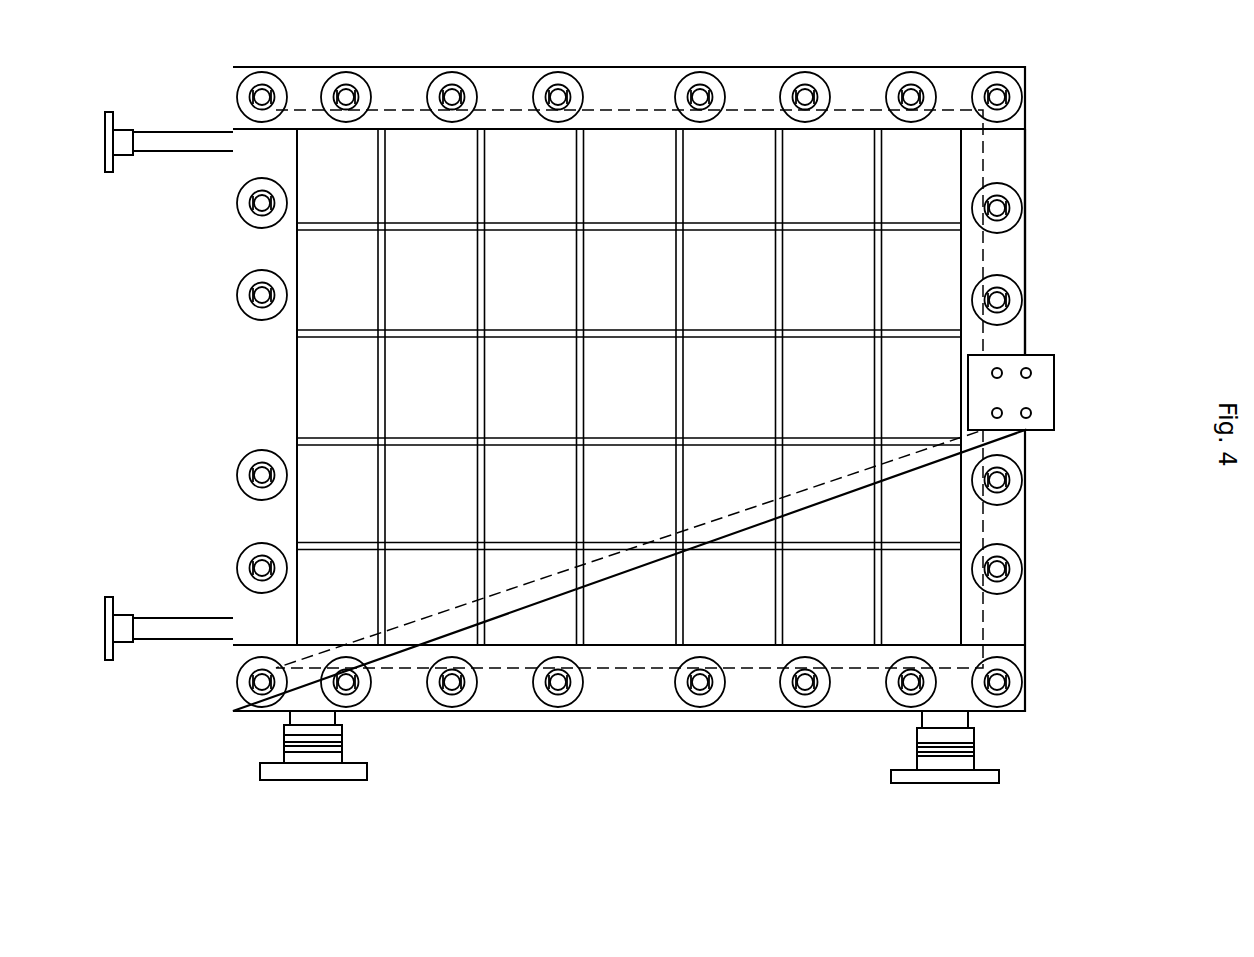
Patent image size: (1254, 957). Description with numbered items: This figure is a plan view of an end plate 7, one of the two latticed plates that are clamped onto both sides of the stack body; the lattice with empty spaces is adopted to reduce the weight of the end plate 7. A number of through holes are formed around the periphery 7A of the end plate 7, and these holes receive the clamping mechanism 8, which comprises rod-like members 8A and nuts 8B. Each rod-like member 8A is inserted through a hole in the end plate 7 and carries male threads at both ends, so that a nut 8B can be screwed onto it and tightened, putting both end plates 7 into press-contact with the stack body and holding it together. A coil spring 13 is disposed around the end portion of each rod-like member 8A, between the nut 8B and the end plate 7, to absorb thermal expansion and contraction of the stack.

The end plate 7 is at (486, 776).
The periphery 7A is at (1025, 657).
The clamping mechanism 8 is at (752, 750).
The rod-like member 8A is at (798, 695).
The nut 8B is at (690, 695).
The coil spring 13 is at (253, 693).